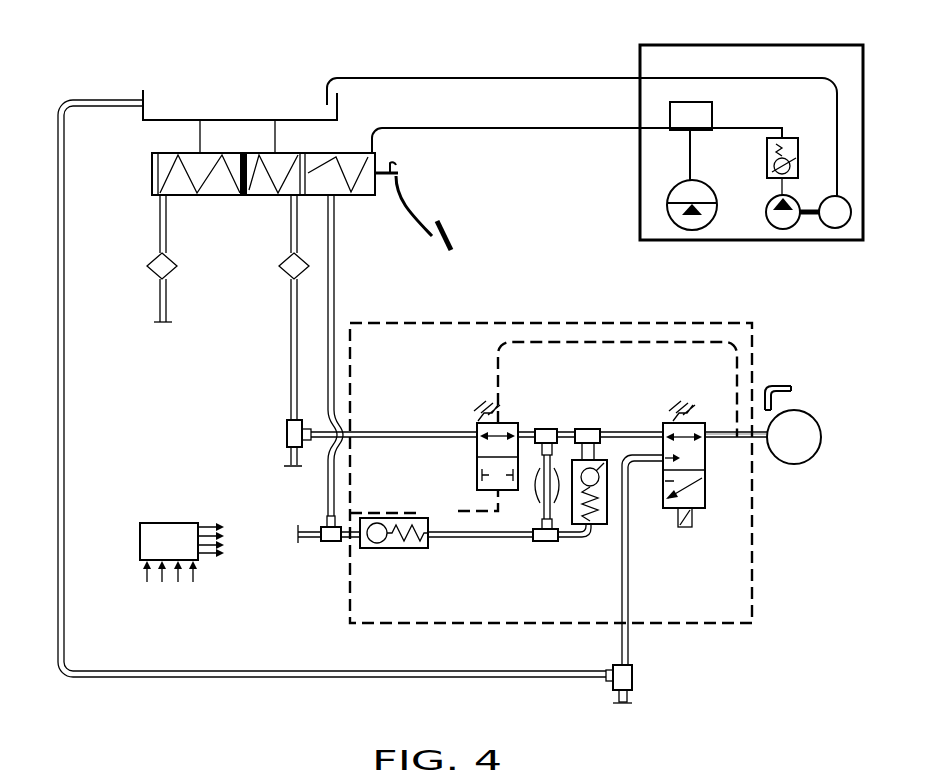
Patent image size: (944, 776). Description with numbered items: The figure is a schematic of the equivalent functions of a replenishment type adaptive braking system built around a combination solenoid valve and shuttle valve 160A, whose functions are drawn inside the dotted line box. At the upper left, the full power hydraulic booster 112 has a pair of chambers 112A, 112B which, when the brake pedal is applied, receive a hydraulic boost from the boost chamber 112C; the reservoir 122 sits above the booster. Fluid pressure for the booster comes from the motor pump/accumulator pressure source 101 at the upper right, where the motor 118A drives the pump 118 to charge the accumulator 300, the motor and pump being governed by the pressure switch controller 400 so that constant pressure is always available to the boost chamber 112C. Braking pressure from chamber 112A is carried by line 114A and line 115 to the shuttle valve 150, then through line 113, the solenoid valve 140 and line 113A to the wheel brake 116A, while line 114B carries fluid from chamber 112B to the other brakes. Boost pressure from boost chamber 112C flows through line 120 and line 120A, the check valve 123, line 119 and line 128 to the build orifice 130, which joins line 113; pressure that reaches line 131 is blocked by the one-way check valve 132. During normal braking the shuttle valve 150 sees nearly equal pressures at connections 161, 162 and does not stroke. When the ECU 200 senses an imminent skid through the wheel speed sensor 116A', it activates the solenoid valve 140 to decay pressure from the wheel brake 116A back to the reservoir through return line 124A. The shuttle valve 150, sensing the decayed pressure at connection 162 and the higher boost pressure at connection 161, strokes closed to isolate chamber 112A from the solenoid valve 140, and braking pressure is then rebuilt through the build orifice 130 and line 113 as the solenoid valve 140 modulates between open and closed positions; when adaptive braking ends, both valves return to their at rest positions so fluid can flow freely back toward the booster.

The motor pump/accumulator pressure source 101 is at (650, 240).
The full power hydraulic booster 112 is at (152, 155).
The chamber 112A is at (260, 195).
The chamber 112B is at (178, 185).
The boost chamber 112C is at (365, 195).
The line 113 is at (614, 430).
The line 113A is at (737, 440).
The line 114A is at (290, 357).
The line 114B is at (157, 305).
The line 115 is at (380, 428).
The wheel brake 116A is at (811, 471).
The wheel speed sensor 116A' is at (804, 372).
The pump 118 is at (778, 231).
The motor 118A is at (833, 229).
The line 119 is at (450, 540).
The line 120 is at (334, 310).
The line 120A is at (345, 540).
The reservoir 122 is at (258, 112).
The check valve 123 is at (390, 548).
The return line 124A is at (630, 646).
The line 128 is at (545, 428).
The build orifice 130 is at (530, 490).
The line 131 is at (560, 545).
The one-way check valve 132 is at (600, 527).
The solenoid valve 140 is at (700, 510).
The shuttle valve 150 is at (477, 466).
The combination solenoid valve and shuttle valve 160A is at (755, 615).
The connection 161 is at (424, 504).
The connection 162 is at (625, 350).
The ECU 200 is at (182, 552).
The accumulator 300 is at (700, 180).
The pressure switch controller 400 is at (712, 115).